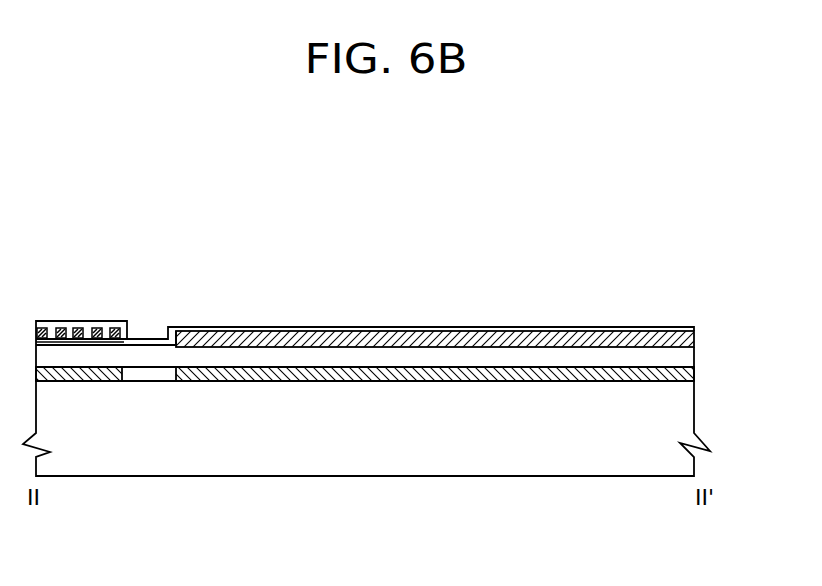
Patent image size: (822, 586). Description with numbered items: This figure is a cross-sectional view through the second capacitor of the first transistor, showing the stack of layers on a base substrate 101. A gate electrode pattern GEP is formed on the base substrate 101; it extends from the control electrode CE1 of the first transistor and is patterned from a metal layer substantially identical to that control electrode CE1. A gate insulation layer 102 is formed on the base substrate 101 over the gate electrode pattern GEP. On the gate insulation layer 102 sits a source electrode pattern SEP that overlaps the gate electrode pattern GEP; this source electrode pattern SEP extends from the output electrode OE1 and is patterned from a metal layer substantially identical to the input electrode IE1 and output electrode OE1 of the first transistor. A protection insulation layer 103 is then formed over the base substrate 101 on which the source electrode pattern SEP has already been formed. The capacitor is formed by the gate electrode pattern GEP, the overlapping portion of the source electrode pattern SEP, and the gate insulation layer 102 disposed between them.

The base substrate 101 is at (393, 458).
The gate insulation layer 102 is at (692, 351).
The protection insulation layer 103 is at (692, 326).
The control electrode CE1 is at (63, 380).
The input electrode IE1 is at (108, 343).
The output electrode OE1 is at (122, 338).
The gate electrode pattern GEP is at (472, 381).
The source electrode pattern SEP is at (541, 347).